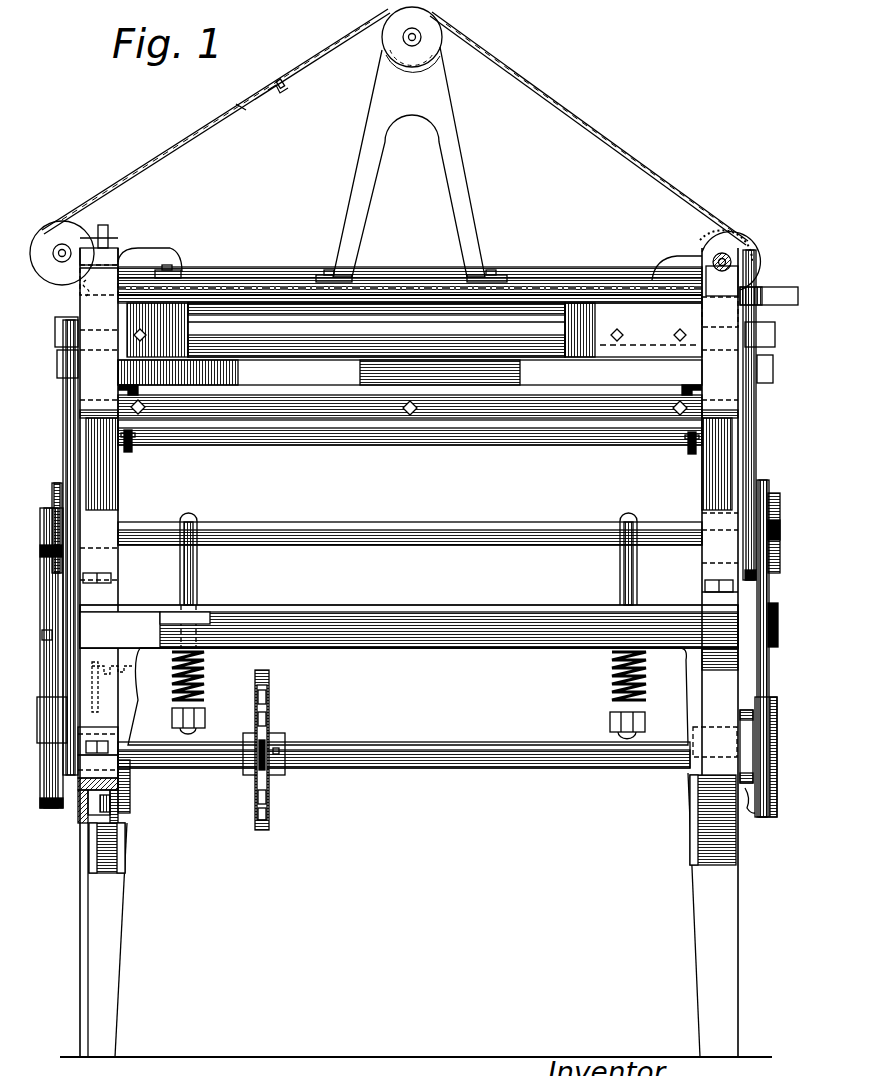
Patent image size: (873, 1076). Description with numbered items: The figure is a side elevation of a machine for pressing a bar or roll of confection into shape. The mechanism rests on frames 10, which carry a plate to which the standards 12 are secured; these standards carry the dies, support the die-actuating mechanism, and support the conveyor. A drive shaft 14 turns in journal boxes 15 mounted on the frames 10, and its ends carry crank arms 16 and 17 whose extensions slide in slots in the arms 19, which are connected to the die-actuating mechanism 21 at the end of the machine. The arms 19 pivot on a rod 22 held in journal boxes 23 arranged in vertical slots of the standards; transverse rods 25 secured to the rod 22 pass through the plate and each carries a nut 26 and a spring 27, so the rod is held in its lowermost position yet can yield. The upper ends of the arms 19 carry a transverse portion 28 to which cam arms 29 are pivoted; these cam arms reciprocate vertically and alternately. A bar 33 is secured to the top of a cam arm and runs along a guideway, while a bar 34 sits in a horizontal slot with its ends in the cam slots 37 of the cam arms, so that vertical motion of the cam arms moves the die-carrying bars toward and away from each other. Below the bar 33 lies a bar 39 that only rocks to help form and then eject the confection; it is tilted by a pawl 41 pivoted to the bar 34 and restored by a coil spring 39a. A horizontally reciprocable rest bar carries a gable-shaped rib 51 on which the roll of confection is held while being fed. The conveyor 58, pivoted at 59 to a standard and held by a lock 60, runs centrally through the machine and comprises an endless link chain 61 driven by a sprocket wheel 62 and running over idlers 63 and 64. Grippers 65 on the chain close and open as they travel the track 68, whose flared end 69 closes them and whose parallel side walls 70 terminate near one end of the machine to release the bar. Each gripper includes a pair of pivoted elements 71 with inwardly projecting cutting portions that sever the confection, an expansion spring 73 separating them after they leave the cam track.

The frames 10 is at (124, 848).
The standard 12 is at (119, 503).
The drive shaft 14 is at (395, 745).
The journal box 15 is at (122, 740).
The crank arm 16 is at (72, 790).
The crank arm 17 is at (762, 818).
The arm 19 is at (46, 655).
The die actuating mechanism 21 is at (755, 461).
The rod 22 is at (407, 522).
The journal box 23 is at (110, 553).
The transverse rod 25 is at (199, 596).
The nut 26 is at (205, 712).
The spring 27 is at (205, 663).
The transversely arranged portion 28 is at (54, 500).
The cam arm 29 is at (66, 415).
The bar 33 is at (190, 335).
The bar 34 is at (240, 372).
The cam slot 37 is at (572, 278).
The bar 39 is at (410, 420).
The coil spring 39a is at (133, 450).
The pawl 41 is at (120, 392).
The gable shaped rib 51 is at (450, 352).
The conveyor 58 is at (238, 112).
The pivot 59 is at (733, 256).
The lock 60 is at (108, 240).
The endless link chain 61 is at (178, 148).
The sprocket wheel 62 is at (722, 238).
The idler 63 is at (44, 267).
The idler 64 is at (432, 45).
The gripper 65 is at (260, 92).
The track 68 is at (256, 278).
The flared end 69 is at (772, 290).
The side walls 70 is at (214, 280).
The hinged element 71 is at (390, 612).
The expansion spring 73 is at (708, 478).